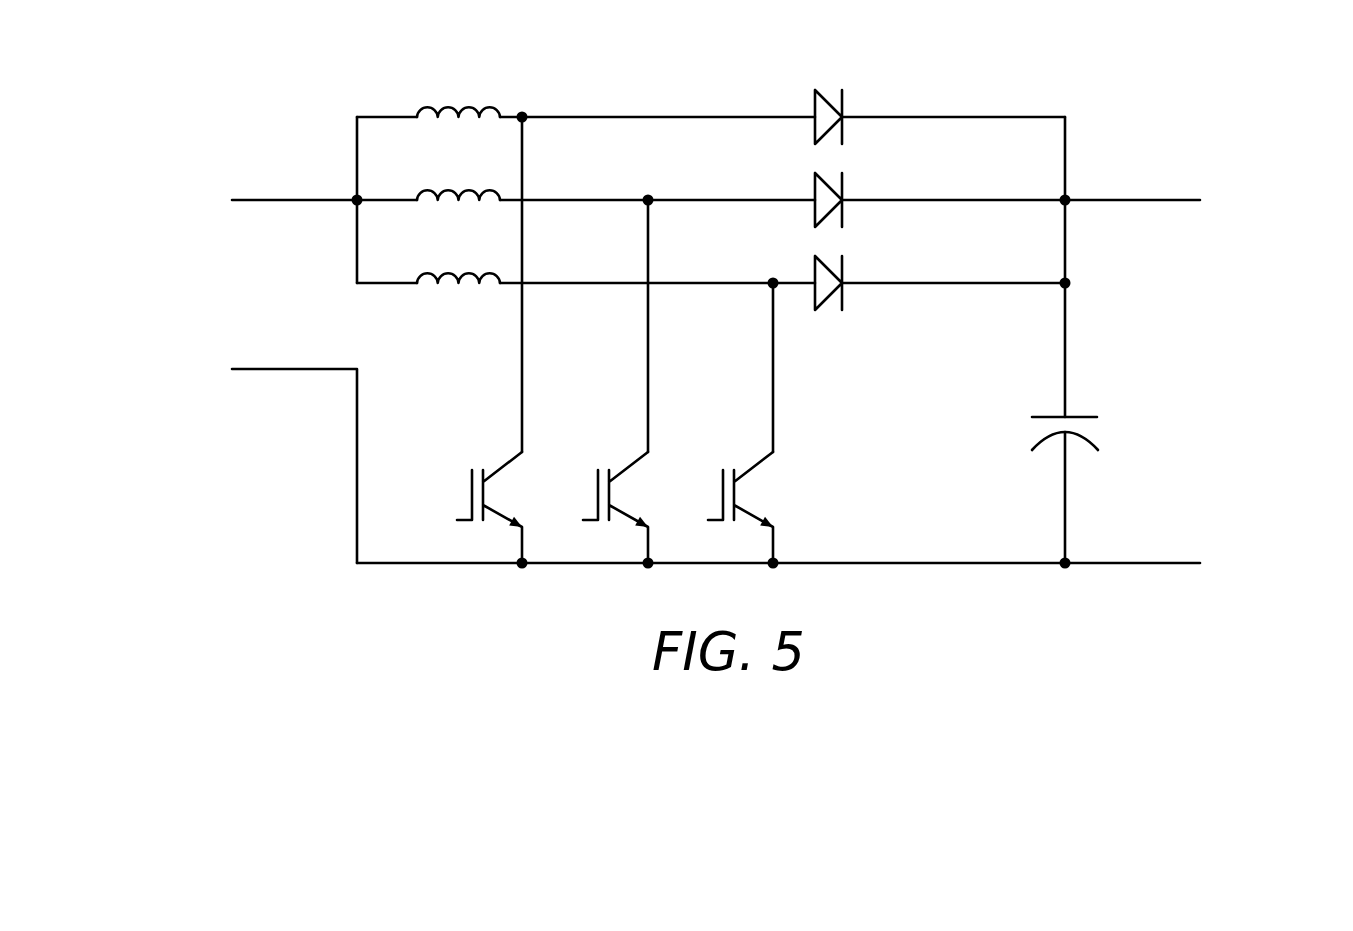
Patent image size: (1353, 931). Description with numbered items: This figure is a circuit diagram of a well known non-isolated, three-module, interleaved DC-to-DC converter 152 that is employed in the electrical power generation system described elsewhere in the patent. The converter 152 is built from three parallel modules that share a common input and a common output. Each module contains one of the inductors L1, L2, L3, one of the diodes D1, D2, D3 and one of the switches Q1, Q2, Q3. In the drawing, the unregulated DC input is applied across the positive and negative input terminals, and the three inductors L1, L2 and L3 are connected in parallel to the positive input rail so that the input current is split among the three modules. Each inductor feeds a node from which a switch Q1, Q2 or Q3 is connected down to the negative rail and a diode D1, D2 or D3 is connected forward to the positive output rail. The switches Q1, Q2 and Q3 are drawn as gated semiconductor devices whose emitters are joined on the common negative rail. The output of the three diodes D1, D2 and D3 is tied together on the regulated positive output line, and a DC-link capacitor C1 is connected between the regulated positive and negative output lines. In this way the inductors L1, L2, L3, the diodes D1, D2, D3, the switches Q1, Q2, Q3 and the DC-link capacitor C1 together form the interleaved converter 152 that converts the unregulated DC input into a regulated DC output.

The non-isolated, three-module, interleaved DC-to-DC converter 152 is at (707, 300).
The inductor L1 is at (458, 97).
The inductor L2 is at (458, 180).
The inductor L3 is at (458, 263).
The diode D1 is at (809, 117).
The diode D2 is at (809, 200).
The diode D3 is at (809, 283).
The switch Q1 is at (489, 500).
The switch Q2 is at (615, 500).
The switch Q3 is at (740, 500).
The DC-link capacitor C1 is at (1083, 433).